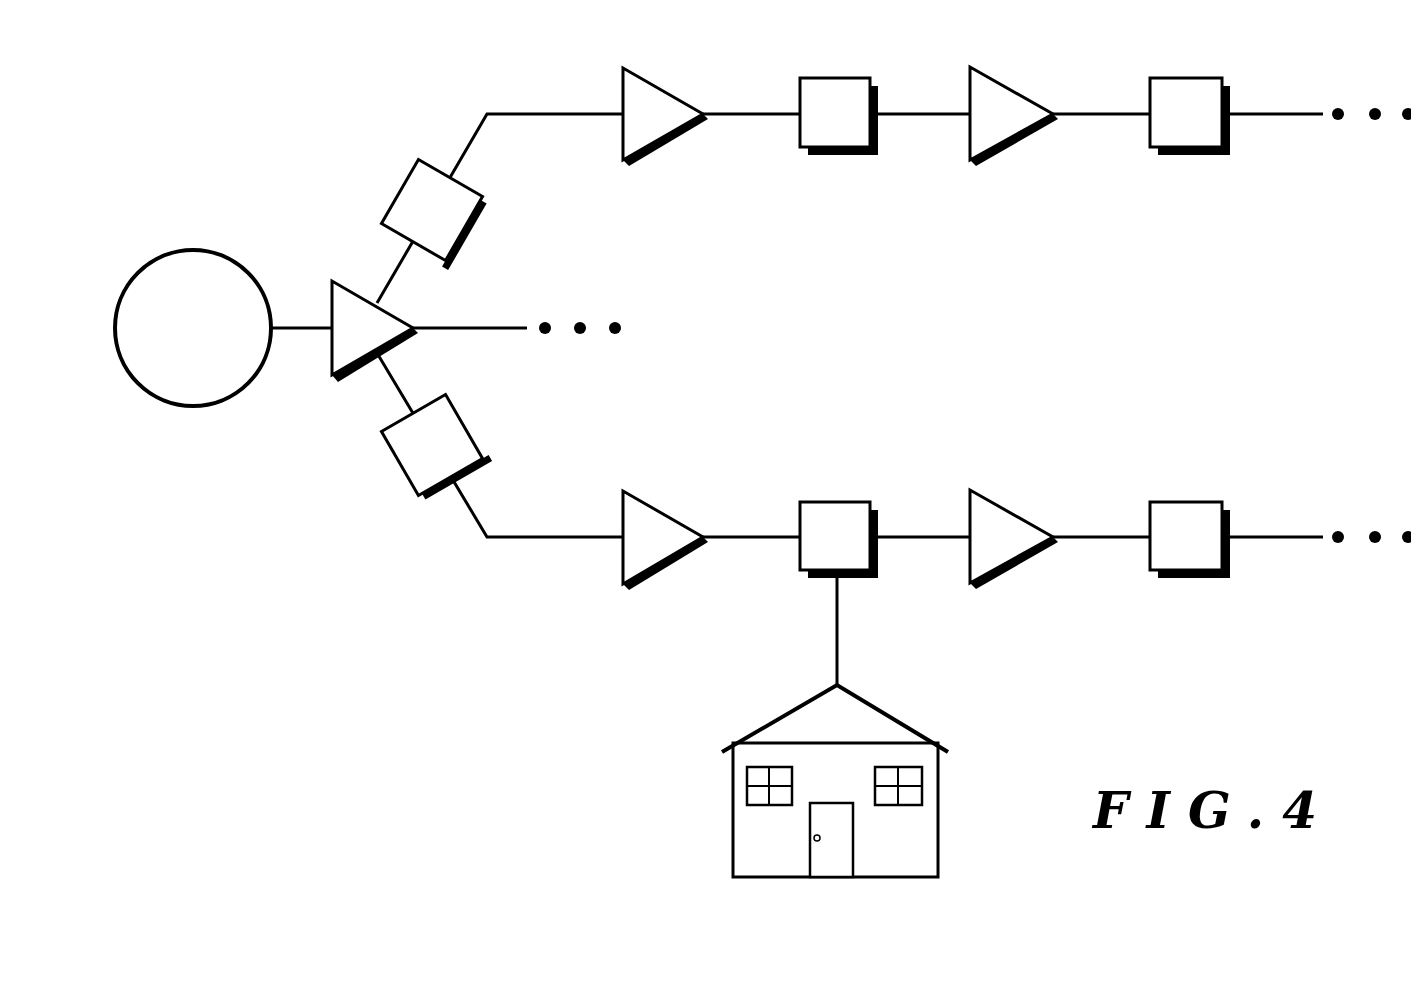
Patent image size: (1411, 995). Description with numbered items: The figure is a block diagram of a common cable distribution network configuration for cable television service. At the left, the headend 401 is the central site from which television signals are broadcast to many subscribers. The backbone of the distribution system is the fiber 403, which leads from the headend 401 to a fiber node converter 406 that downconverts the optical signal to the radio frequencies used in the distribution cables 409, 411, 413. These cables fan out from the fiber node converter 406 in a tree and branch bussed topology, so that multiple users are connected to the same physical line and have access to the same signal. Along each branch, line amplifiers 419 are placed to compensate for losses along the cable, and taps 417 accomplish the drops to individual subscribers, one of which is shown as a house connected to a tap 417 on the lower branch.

The headend 401 is at (176, 252).
The fiber 403 is at (306, 326).
The fiber node converter 406 is at (328, 340).
The distribution cable 409 is at (393, 374).
The distribution cable 411 is at (455, 327).
The distribution cable 413 is at (487, 112).
The tap 417 is at (476, 213).
The line amplifier 419 is at (681, 99).